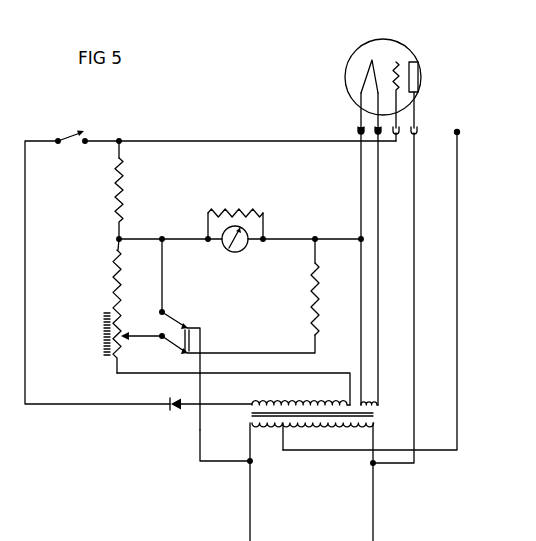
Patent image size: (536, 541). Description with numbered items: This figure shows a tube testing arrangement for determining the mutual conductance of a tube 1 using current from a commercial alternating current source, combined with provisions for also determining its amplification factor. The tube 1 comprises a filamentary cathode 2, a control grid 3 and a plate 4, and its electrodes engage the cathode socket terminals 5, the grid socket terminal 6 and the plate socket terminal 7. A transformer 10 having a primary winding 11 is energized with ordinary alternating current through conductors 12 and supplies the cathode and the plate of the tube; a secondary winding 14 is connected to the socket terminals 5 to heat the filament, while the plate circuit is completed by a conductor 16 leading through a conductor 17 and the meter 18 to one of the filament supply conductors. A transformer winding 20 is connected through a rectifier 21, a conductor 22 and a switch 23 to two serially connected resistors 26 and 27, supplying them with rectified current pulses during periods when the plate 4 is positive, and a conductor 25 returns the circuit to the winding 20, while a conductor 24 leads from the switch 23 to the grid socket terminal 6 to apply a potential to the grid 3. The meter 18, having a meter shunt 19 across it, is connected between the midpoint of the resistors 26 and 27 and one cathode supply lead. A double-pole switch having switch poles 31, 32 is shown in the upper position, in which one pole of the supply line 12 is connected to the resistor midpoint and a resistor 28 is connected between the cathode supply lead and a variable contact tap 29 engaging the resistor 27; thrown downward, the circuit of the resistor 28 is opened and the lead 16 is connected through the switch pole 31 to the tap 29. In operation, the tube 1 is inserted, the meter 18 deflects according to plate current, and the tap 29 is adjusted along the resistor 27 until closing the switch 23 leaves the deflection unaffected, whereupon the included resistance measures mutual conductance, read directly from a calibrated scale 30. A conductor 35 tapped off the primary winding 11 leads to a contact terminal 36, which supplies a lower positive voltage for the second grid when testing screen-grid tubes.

The tube 1 is at (421, 84).
The filamentary cathode 2 is at (362, 81).
The control grid 3 is at (400, 62).
The plate 4 is at (419, 69).
The cathode socket terminals 5 is at (364, 266).
The grid socket terminal 6 is at (398, 134).
The plate socket terminal 7 is at (416, 135).
The transformer 10 is at (320, 419).
The primary winding 11 is at (312, 431).
The conductors 12 is at (250, 497).
The secondary winding 14 is at (378, 407).
The conductor 16 is at (414, 430).
The conductor 17 is at (180, 242).
The meter 18 is at (244, 249).
The meter shunt 19 is at (238, 212).
The transformer winding 20 is at (280, 404).
The rectifier 21 is at (174, 400).
The conductor 22 is at (25, 291).
The switch 23 is at (76, 134).
The conductor 24 is at (193, 141).
The conductor 25 is at (323, 377).
The resistor 26 is at (123, 190).
The resistor 27 is at (122, 263).
The resistor 28 is at (320, 270).
The variable contact tap 29 is at (143, 340).
The scale 30 is at (105, 336).
The switch pole 31 is at (178, 326).
The switch pole 32 is at (178, 354).
The conductor 35 is at (306, 451).
The contact terminal 36 is at (459, 133).